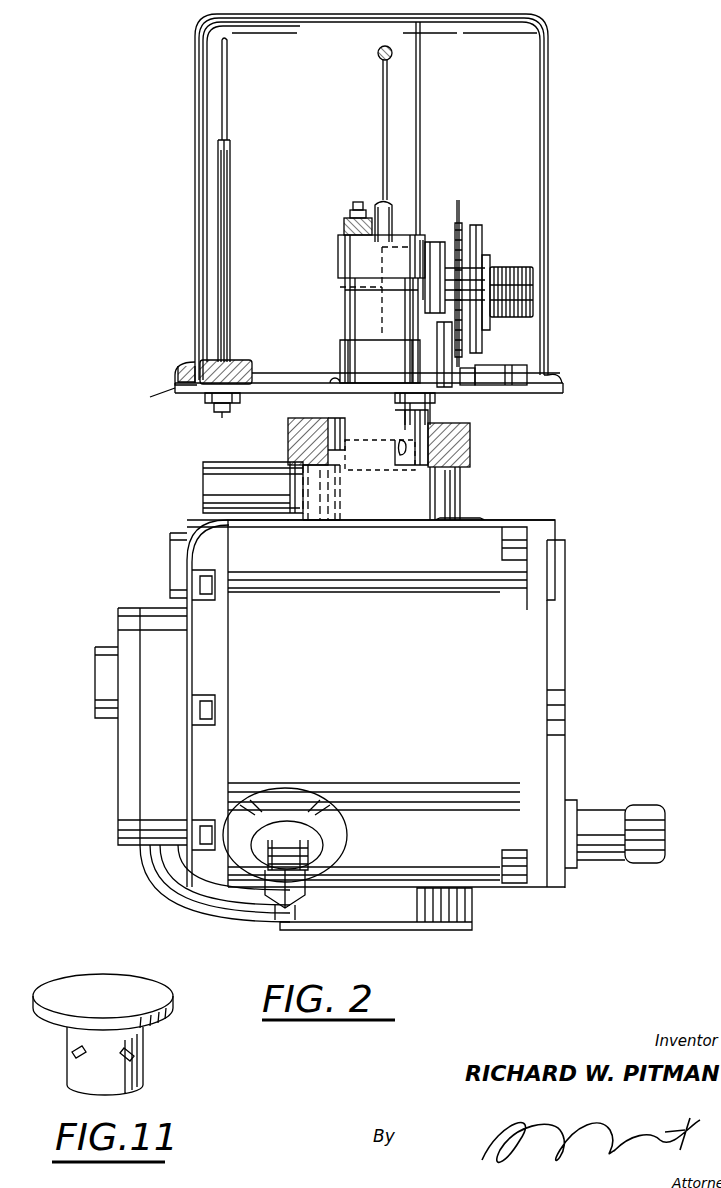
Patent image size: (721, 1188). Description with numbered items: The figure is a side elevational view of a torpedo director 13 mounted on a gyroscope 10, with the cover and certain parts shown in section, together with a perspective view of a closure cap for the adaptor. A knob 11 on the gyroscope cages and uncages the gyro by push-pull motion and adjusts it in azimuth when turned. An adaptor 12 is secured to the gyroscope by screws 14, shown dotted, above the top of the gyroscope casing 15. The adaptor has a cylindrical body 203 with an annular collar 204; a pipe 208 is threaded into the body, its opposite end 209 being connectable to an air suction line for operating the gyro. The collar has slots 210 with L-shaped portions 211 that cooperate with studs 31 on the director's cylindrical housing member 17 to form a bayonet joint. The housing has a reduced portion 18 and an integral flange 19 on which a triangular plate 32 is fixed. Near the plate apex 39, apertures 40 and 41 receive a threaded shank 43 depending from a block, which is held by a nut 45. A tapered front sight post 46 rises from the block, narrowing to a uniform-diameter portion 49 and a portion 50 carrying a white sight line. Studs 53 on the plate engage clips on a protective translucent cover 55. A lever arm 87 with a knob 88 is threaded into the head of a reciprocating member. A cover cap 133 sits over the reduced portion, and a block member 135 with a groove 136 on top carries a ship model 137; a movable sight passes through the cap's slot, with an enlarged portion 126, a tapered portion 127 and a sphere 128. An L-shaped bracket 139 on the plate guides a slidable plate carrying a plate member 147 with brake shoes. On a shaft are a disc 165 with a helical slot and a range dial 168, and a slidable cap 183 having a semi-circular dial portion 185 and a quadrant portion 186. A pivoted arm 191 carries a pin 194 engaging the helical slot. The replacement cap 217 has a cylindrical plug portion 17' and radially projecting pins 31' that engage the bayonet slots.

In FIG. 2, the gyroscope 10 is at (372, 676).
In FIG. 2, the knob 11 is at (645, 863).
In FIG. 2, the adaptor 12 is at (456, 496).
In FIG. 2, the torpedo director 13 is at (282, 224).
In FIG. 2, the screws 14 is at (338, 503).
In FIG. 2, the gyroscope casing 15 is at (500, 527).
In FIG. 2, the cylindrical housing member 17 is at (436, 414).
In FIG. 2, the reduced portion 18 is at (345, 310).
In FIG. 2, the integral flange 19 is at (437, 407).
In FIG. 2, the studs 31 is at (388, 439).
In FIG. 2, the plate 32 is at (298, 393).
In FIG. 2, the apex 39 is at (160, 393).
In FIG. 2, the aperture 40 is at (195, 366).
In FIG. 2, the aperture 41 is at (232, 384).
In FIG. 2, the screw threaded shank 43 is at (220, 412).
In FIG. 2, the nut 45 is at (205, 398).
In FIG. 2, the tapered front sight post 46 is at (220, 280).
In FIG. 2, the reduced uniform-diameter portion 49 is at (230, 118).
In FIG. 2, the sight line portion 50 is at (230, 86).
In FIG. 2, the studs 53 is at (405, 372).
In FIG. 2, the protective translucent cover 55 is at (194, 138).
In FIG. 2, the lever arm 87 is at (470, 368).
In FIG. 2, the knob 88 is at (520, 365).
In FIG. 2, the enlarged portion 126 is at (392, 215).
In FIG. 2, the tapered portion 127 is at (383, 96).
In FIG. 2, the sphere 128 is at (378, 50).
In FIG. 2, the cover cap 133 is at (338, 257).
In FIG. 2, the block member 135 is at (350, 216).
In FIG. 2, the groove 136 is at (346, 232).
In FIG. 2, the ship model 137 is at (357, 202).
In FIG. 2, the L-shaped bracket 139 is at (345, 286).
In FIG. 2, the plate member 147 is at (462, 236).
In FIG. 2, the disc 165 is at (457, 200).
In FIG. 2, the dial 168 is at (482, 246).
In FIG. 2, the slidable cap 183 is at (533, 285).
In FIG. 2, the semi-circular dial portion 185 is at (488, 264).
In FIG. 2, the quadrant portion 186 is at (470, 332).
In FIG. 2, the arm 191 is at (430, 248).
In FIG. 2, the pin 194 is at (450, 252).
In FIG. 2, the cylindrical body 203 is at (462, 477).
In FIG. 2, the annular collar 204 is at (355, 422).
In FIG. 2, the pipe 208 is at (203, 466).
In FIG. 2, the pipe end 209 is at (203, 490).
In FIG. 2, the slots 210 is at (345, 434).
In FIG. 2, the L-shaped portion 211 is at (402, 451).
In FIG. 11, the replacement cap 217 is at (115, 988).
In FIG. 11, the cylindrical plug portion 17' is at (135, 1061).
In FIG. 11, the radially projecting pins 31' is at (109, 1060).